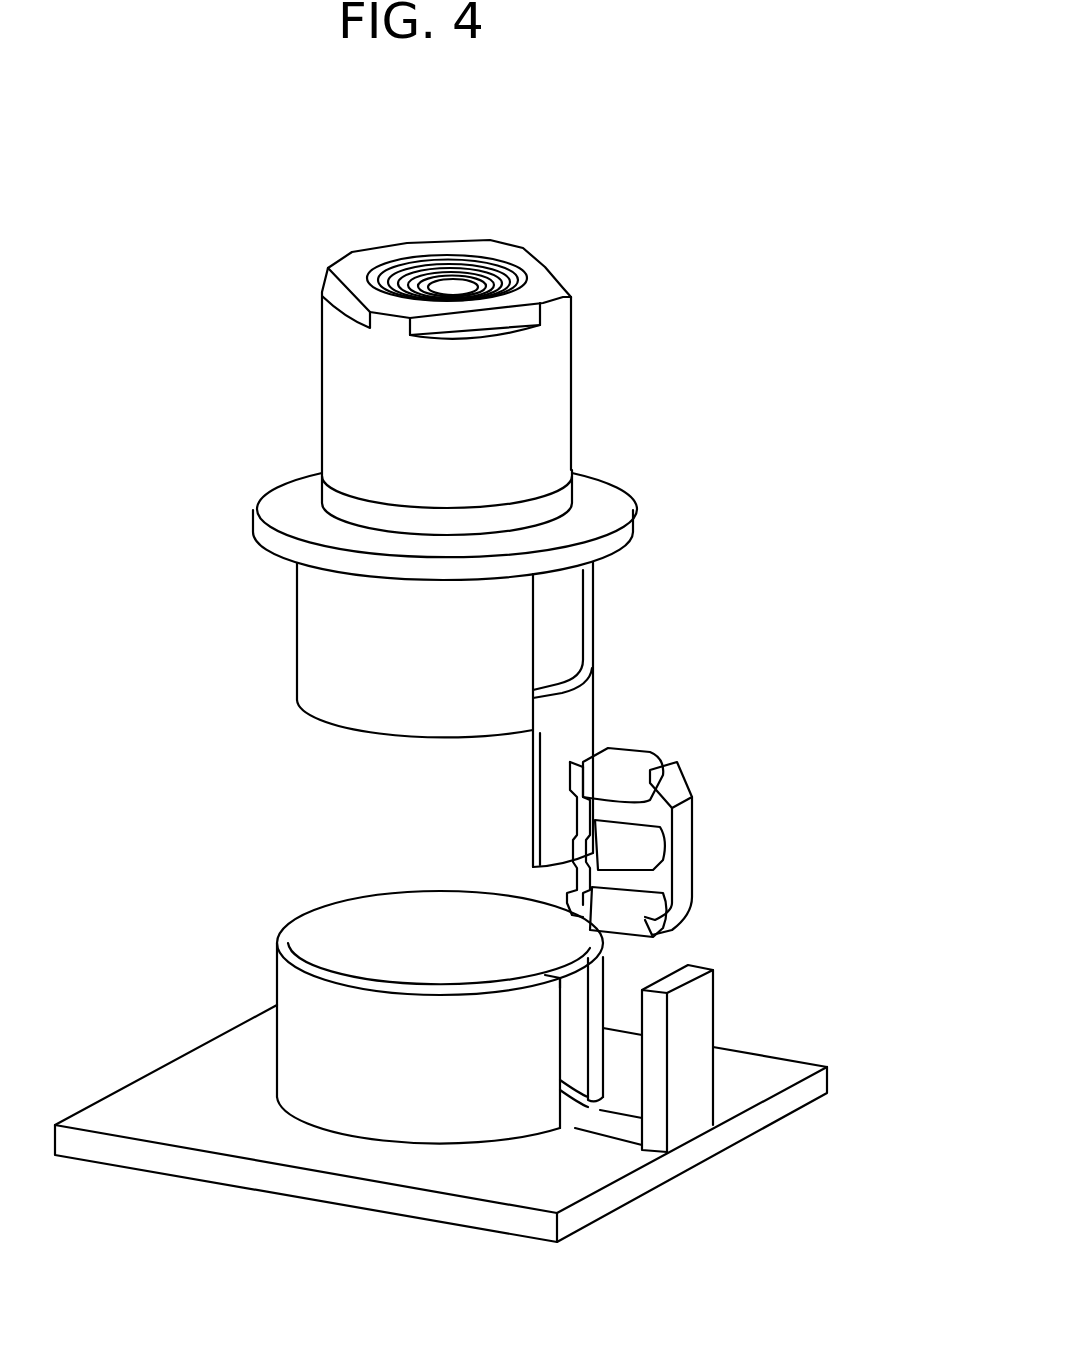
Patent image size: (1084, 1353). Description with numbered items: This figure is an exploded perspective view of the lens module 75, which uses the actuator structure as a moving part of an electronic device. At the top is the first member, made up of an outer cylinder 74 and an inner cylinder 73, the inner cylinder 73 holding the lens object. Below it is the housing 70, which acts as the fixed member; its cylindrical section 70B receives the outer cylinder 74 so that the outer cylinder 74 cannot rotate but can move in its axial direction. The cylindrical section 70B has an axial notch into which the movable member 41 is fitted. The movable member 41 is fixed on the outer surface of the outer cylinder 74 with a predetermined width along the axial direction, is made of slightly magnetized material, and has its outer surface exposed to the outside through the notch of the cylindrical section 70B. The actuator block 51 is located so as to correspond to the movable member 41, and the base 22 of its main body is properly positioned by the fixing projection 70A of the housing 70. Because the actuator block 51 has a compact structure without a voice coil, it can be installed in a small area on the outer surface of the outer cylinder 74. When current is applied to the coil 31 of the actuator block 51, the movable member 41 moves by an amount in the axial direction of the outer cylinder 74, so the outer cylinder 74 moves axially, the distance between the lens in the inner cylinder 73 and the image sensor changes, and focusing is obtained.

The lens module 75 is at (466, 529).
The inner cylinder 73 is at (355, 378).
The outer cylinder 74 is at (327, 640).
The movable member 41 is at (575, 705).
The actuator block 51 is at (755, 842).
The base 22 is at (680, 848).
The coil 31 is at (630, 905).
The housing 70 is at (457, 1092).
The fixing projection 70A is at (688, 1065).
The cylindrical section 70B is at (292, 988).